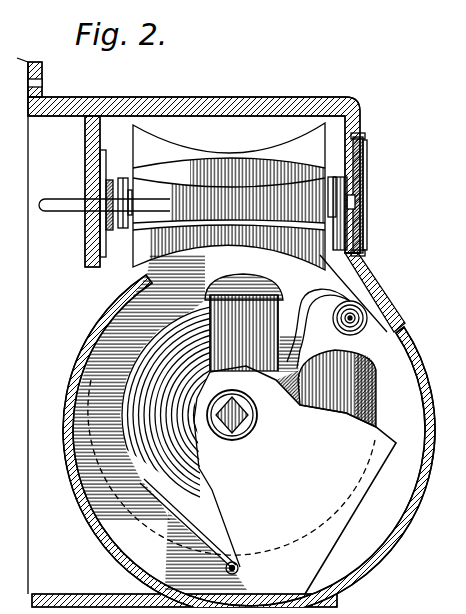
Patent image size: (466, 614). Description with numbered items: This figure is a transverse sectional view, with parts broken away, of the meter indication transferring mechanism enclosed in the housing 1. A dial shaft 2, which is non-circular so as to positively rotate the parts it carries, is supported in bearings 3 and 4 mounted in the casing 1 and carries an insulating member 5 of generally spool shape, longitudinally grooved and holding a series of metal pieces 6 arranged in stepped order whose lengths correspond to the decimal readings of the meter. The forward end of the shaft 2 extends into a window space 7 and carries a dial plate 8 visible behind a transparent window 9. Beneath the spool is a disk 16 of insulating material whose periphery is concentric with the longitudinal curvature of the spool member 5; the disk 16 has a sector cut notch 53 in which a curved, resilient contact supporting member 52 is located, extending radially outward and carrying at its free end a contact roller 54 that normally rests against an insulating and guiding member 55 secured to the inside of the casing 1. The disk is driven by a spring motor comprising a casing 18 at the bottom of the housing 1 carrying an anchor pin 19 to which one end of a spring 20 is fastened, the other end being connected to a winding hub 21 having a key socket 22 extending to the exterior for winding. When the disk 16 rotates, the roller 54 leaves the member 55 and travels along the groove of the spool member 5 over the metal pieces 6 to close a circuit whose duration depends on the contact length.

The housing 1 is at (423, 358).
The dial shaft 2 is at (58, 213).
The bearing 3 is at (98, 190).
The bearing 4 is at (347, 213).
The insulating member 5 is at (163, 148).
The metal pieces 6 is at (268, 155).
The window space 7 is at (367, 175).
The dial plate 8 is at (363, 152).
The transparent window 9 is at (356, 203).
The disk 16 is at (370, 383).
The casing 18 is at (78, 370).
The anchor pin 19 is at (240, 568).
The spring 20 is at (207, 485).
The winding hub 21 is at (255, 420).
The key socket 22 is at (238, 425).
The contact supporting member 52 is at (305, 333).
The sector cut notch 53 is at (283, 308).
The contact roller 54 is at (358, 327).
The insulating and guiding member 55 is at (365, 285).